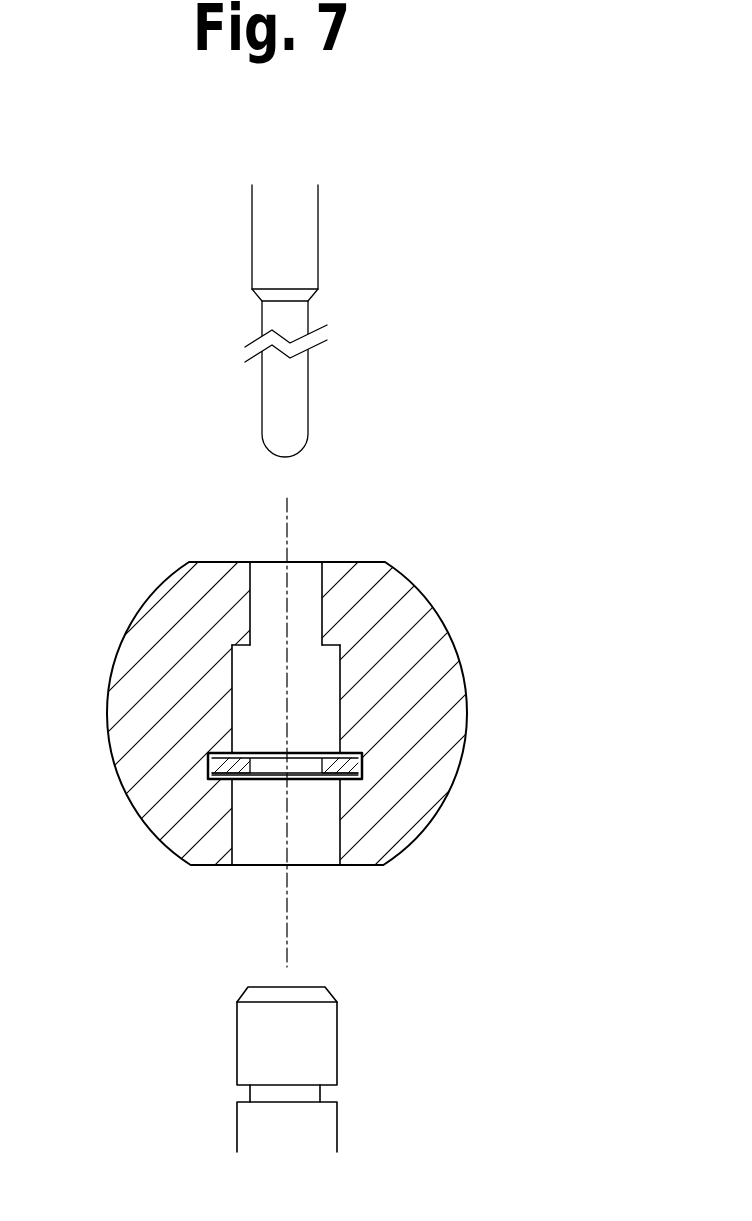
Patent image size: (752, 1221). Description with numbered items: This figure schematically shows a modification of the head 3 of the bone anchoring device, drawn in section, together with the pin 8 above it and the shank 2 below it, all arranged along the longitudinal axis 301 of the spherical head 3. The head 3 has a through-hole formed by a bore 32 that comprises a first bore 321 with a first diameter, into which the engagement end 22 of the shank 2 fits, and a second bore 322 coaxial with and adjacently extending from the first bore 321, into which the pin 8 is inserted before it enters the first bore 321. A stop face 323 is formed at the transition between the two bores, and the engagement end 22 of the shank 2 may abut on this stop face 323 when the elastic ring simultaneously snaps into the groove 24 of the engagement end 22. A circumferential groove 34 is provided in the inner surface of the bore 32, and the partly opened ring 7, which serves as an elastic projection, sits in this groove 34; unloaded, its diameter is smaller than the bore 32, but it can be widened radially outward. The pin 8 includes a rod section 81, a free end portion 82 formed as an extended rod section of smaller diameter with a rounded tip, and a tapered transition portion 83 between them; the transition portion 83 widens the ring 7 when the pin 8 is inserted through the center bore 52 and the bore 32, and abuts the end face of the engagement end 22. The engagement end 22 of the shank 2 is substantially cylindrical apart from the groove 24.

The shank 2 is at (276, 1072).
The engagement end 22 is at (322, 1032).
The groove 24 is at (331, 1095).
The head 3 is at (376, 713).
The longitudinal axis 301 is at (290, 930).
The bore 32 is at (320, 705).
The first bore 321 is at (327, 804).
The second bore 322 is at (318, 606).
The stop face 323 is at (330, 652).
The circumferential groove 34 is at (208, 768).
The partly opened ring 7 is at (213, 794).
The center bore 52 is at (350, 794).
The pin 8 is at (294, 321).
The rod section 81 is at (272, 223).
The free end portion 82 is at (280, 415).
The transition portion 83 is at (255, 297).